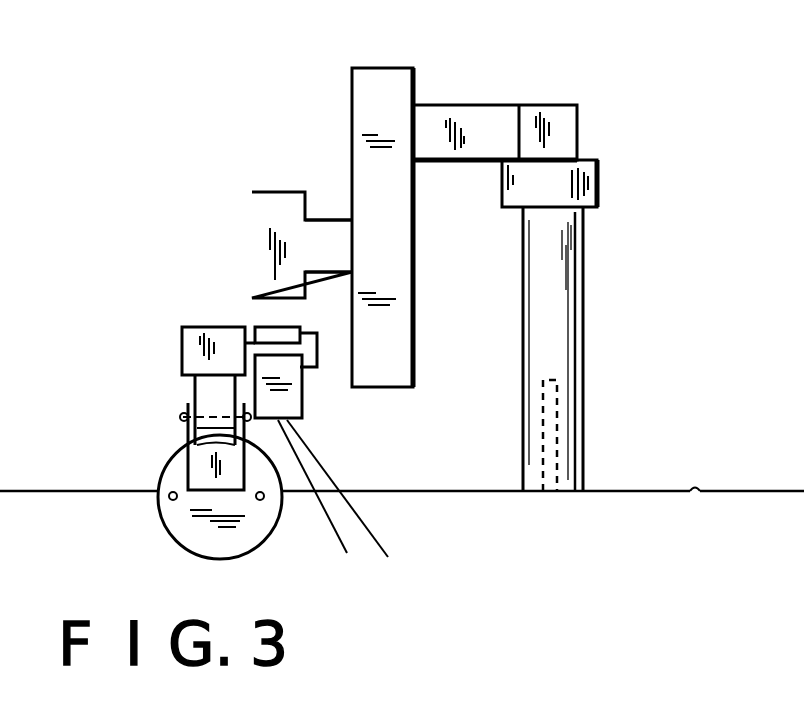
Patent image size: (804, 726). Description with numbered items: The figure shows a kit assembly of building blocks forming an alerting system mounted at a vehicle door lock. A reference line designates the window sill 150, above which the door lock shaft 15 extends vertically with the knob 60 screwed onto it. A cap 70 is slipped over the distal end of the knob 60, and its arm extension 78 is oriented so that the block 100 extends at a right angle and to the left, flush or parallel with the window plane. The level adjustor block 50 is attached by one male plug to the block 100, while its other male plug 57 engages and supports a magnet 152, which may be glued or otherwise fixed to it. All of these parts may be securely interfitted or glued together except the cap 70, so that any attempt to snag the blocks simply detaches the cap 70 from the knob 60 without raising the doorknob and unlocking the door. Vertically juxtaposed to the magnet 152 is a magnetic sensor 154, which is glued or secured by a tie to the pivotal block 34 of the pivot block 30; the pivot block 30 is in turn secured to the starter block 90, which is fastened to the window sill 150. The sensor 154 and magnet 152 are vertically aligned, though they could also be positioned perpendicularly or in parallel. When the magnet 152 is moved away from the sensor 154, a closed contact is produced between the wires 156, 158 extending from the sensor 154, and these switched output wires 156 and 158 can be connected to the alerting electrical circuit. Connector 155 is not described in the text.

The shaft 15 is at (570, 422).
The pivot block 30 is at (205, 468).
The pivotal block 34 is at (253, 330).
The level adjustor block 50 is at (370, 90).
The male plug 57 is at (330, 230).
The knob 60 is at (560, 275).
The cap 70 is at (593, 177).
The arm extension 78 is at (568, 130).
The starter block 90 is at (265, 517).
The block 100 is at (472, 128).
The window sill 150 is at (697, 491).
The magnet 152 is at (258, 212).
The magnetic sensor 154 is at (298, 388).
The connector 155 is at (315, 350).
The wire 156 is at (388, 557).
The wire 158 is at (347, 553).